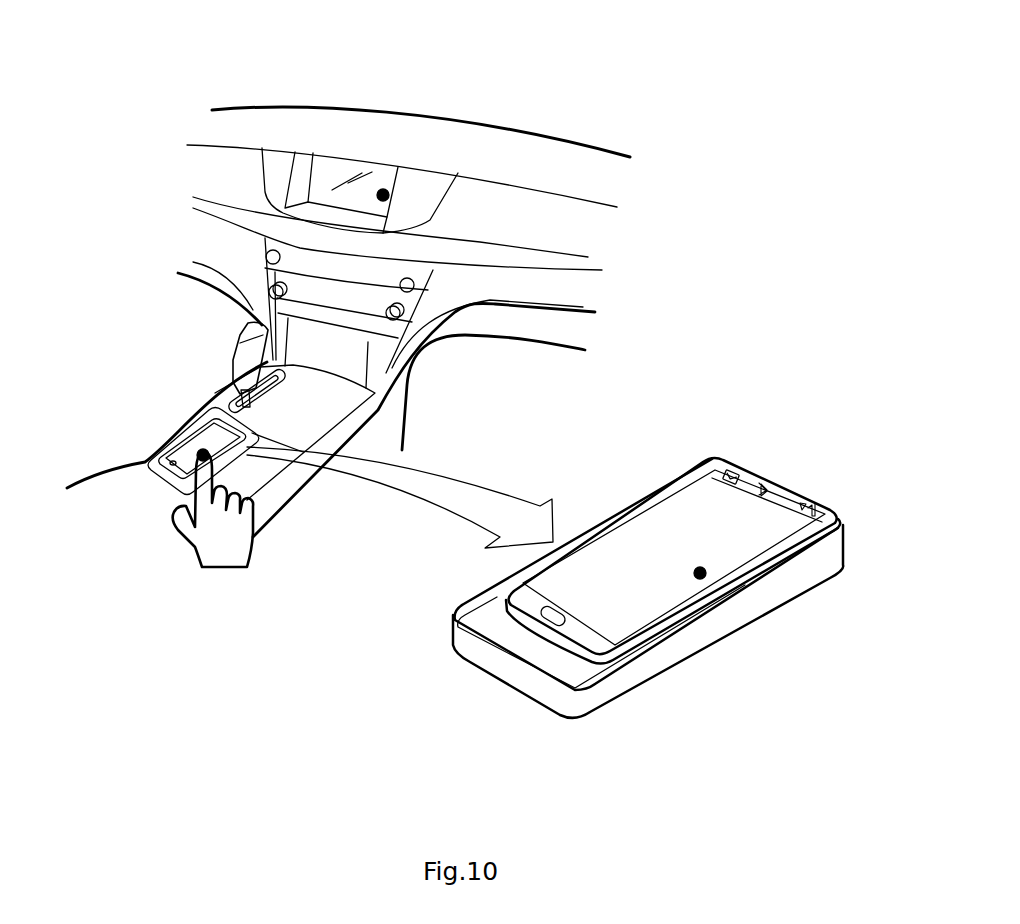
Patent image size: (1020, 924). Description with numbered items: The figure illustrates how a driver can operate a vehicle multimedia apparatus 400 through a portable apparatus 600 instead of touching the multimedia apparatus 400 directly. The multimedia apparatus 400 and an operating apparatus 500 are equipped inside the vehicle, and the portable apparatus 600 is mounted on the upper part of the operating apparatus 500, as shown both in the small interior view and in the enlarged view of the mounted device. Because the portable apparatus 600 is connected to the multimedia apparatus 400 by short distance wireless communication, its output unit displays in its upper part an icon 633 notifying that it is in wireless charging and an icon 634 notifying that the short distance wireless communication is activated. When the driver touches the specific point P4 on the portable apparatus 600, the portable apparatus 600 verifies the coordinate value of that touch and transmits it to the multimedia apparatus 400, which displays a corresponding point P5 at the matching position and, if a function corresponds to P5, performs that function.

The multimedia apparatus 400 is at (340, 168).
The point displayed on the multimedia apparatus P5 is at (382, 189).
The operating apparatus 500 is at (163, 467).
The portable apparatus 600 is at (170, 434).
The specific point touched on the portable apparatus P4 is at (203, 449).
The icon notifying wireless charging 633 is at (735, 470).
The icon notifying short distance wireless communication activation 634 is at (768, 485).